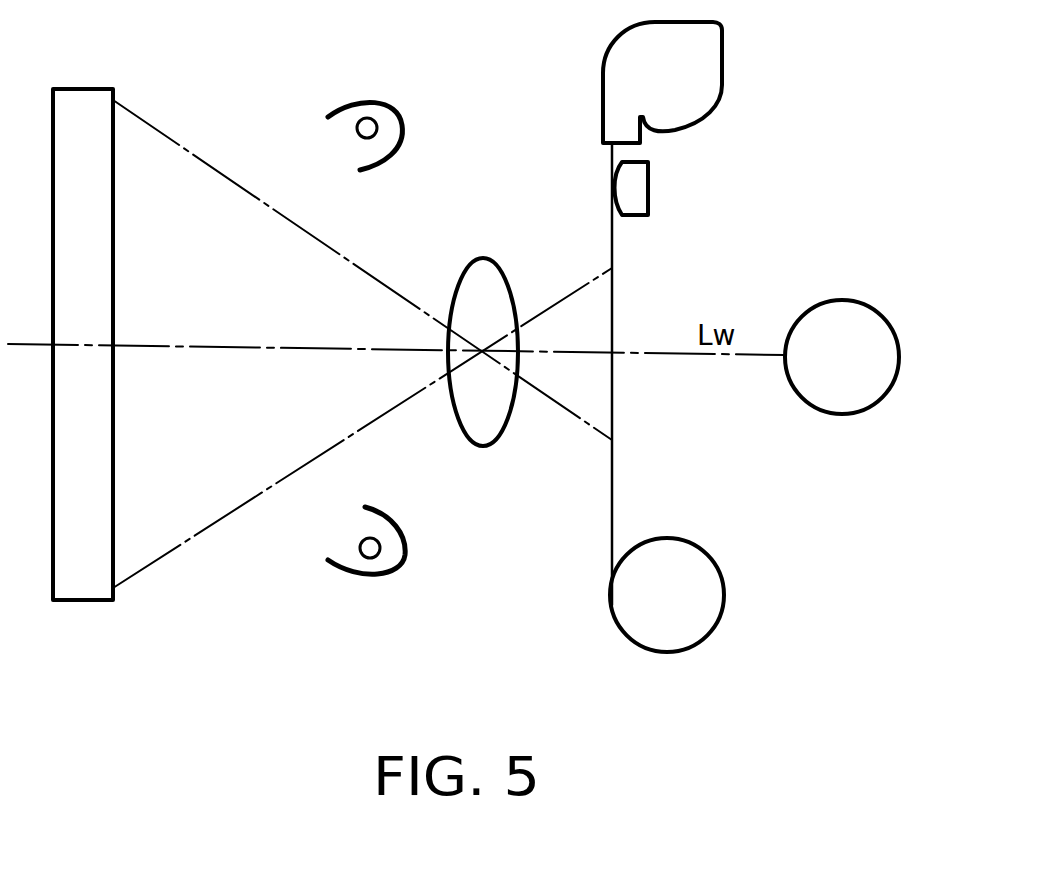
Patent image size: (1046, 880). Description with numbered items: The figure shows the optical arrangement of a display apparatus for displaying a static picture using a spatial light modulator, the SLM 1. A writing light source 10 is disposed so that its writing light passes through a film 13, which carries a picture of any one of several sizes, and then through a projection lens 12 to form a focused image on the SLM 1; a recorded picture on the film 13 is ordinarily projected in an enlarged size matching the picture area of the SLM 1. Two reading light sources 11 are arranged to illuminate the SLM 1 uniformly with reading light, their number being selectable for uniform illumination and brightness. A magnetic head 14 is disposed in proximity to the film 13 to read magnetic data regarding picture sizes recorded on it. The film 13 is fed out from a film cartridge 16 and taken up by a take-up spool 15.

The SLM 1 is at (92, 88).
The writing light source 10 is at (855, 300).
The reading light source 11 is at (398, 105).
The projection lens 12 is at (490, 256).
The film 13 is at (612, 470).
The magnetic head 14 is at (650, 188).
The take-up spool 15 is at (690, 652).
The film cartridge 16 is at (725, 68).